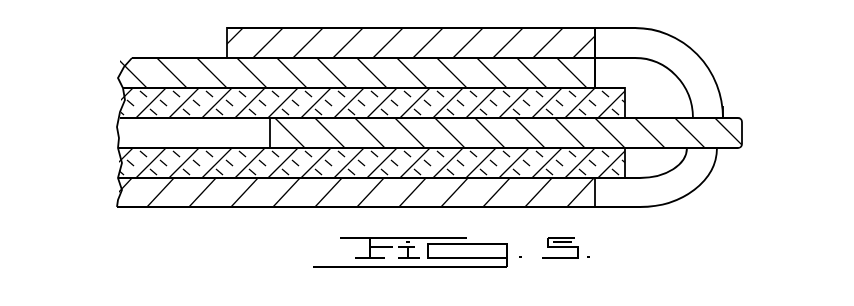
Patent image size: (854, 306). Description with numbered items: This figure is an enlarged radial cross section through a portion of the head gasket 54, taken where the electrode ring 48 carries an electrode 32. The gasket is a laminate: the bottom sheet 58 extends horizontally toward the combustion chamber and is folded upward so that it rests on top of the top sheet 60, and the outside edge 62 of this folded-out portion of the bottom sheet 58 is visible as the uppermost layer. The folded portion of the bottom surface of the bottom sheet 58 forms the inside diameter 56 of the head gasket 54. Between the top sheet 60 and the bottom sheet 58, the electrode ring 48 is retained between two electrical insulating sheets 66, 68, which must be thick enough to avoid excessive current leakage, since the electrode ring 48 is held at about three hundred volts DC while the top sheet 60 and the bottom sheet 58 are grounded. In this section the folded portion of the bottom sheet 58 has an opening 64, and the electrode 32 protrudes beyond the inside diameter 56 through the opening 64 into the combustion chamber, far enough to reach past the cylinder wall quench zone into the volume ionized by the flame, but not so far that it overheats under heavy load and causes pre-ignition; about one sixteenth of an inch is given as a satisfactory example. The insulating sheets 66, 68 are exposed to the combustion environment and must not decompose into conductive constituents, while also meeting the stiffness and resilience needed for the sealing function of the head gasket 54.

The electrode 32 is at (732, 148).
The electrode ring 48 is at (270, 136).
The head gasket 54 is at (162, 217).
The inside diameter 56 is at (722, 115).
The bottom sheet 58 is at (118, 198).
The top sheet 60 is at (123, 72).
The outside edge 62 is at (227, 40).
The opening 64 is at (707, 53).
The electrical insulating sheet 66 is at (118, 167).
The electrical insulating sheet 68 is at (122, 105).